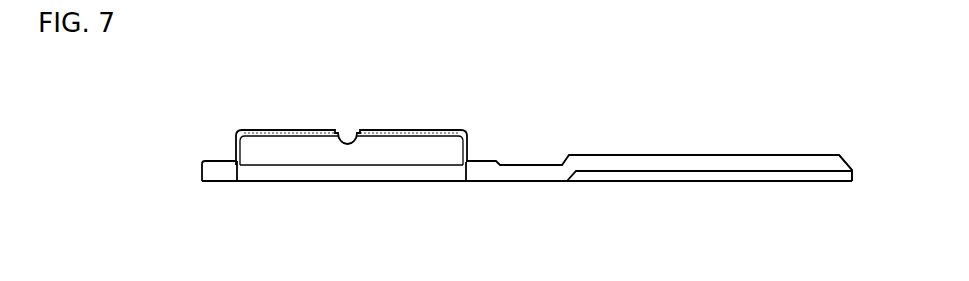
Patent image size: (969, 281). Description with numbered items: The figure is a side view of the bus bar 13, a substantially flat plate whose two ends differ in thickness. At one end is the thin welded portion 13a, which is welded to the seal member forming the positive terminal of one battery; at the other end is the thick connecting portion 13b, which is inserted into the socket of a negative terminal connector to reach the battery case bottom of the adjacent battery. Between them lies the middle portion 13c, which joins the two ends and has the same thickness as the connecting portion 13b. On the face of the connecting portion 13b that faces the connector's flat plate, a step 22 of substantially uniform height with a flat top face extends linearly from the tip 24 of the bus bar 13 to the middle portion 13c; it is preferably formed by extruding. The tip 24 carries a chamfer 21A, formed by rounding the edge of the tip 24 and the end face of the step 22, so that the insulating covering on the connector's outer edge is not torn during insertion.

The bus bar 13 is at (514, 190).
The welded portion 13a is at (383, 130).
The connecting portion 13b is at (705, 173).
The middle portion 13c is at (535, 164).
The step 22 is at (672, 155).
The chamfer 21A is at (842, 156).
The tip 24 is at (852, 183).